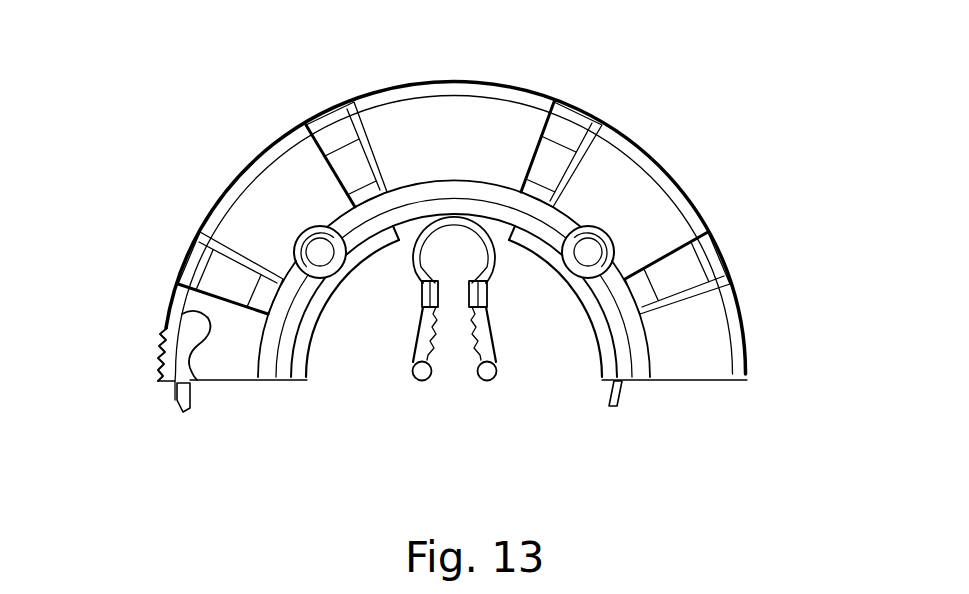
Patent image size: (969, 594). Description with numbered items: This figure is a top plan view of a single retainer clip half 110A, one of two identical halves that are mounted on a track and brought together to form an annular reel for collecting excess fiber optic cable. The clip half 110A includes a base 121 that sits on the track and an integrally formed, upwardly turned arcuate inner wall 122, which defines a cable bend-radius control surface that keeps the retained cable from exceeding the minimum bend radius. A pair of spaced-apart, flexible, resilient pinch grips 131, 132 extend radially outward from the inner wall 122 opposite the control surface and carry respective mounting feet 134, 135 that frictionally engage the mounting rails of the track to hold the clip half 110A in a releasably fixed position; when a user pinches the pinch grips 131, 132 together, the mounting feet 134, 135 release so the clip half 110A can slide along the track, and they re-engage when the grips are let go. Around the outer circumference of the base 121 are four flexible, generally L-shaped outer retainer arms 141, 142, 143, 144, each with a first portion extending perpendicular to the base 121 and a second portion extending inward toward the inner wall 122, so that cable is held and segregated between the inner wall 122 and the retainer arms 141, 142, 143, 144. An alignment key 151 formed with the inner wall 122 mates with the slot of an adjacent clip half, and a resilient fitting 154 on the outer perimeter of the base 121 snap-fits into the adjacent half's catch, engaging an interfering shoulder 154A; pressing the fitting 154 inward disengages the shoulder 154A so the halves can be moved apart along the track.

The retainer clip half 110A is at (165, 145).
The base 121 is at (433, 118).
The inner wall 122 is at (637, 365).
The pinch grip 131 is at (425, 380).
The pinch grip 132 is at (485, 380).
The mounting foot 134 is at (420, 297).
The mounting foot 135 is at (487, 297).
The outer retainer arm 141 is at (227, 272).
The outer retainer arm 142 is at (348, 140).
The outer retainer arm 143 is at (567, 115).
The outer retainer arm 144 is at (690, 270).
The alignment key 151 is at (615, 410).
The resilient fitting 154 is at (193, 397).
The interfering shoulder 154A is at (172, 397).